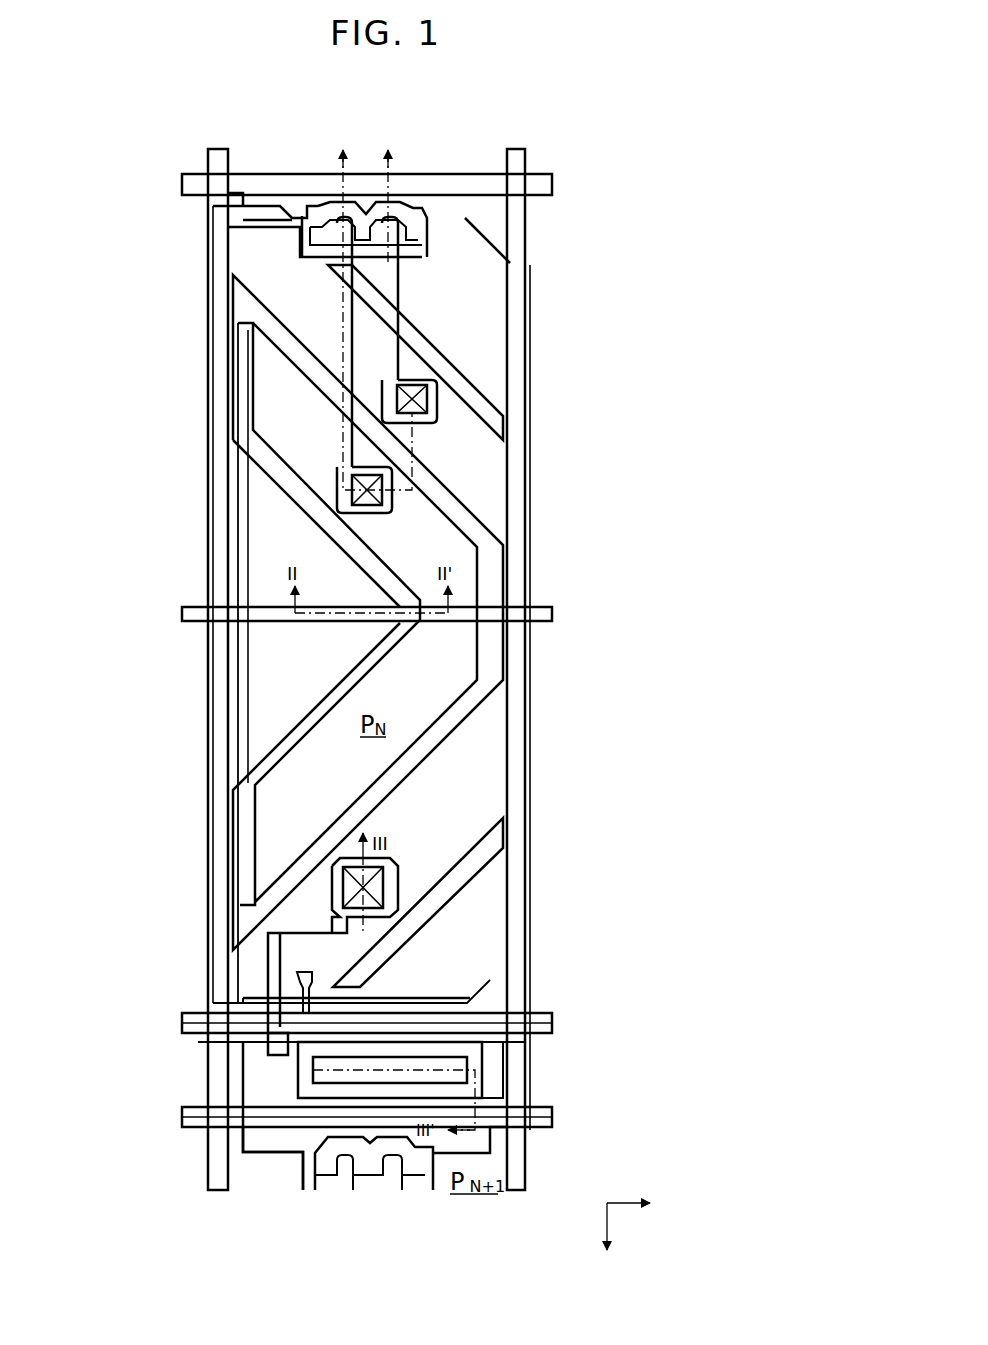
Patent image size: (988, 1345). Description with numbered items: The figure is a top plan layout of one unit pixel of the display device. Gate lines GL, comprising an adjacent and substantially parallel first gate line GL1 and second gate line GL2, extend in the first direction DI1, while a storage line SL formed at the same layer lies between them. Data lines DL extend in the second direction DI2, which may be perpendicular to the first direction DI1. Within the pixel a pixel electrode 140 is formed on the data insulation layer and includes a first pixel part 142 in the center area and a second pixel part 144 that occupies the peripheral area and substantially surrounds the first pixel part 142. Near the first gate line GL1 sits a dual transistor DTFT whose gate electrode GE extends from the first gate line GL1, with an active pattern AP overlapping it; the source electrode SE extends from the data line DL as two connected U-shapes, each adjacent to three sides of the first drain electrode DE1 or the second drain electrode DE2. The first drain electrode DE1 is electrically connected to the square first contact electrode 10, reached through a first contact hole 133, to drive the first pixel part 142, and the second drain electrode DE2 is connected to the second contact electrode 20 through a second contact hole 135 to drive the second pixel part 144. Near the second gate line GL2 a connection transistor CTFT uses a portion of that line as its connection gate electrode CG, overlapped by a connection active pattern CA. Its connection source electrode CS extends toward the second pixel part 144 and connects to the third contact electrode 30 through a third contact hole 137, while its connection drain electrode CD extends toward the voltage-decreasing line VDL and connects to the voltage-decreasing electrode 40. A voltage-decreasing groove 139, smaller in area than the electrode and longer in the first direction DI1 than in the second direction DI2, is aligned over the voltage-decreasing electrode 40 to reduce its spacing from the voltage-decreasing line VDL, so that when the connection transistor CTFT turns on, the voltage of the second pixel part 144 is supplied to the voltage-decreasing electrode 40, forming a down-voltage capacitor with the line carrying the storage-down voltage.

The data line DL is at (232, 216).
The gate line GL is at (640, 158).
The first gate line GL1 is at (545, 186).
The second gate line GL2 is at (548, 1021).
The storage line SL is at (190, 614).
The dual transistor DTFT is at (447, 332).
The source electrode SE is at (413, 203).
The active pattern AP is at (398, 216).
The gate electrode GE is at (368, 252).
The first drain electrode DE1 is at (348, 302).
The second drain electrode DE2 is at (398, 278).
The pixel electrode 140 is at (444, 634).
The first pixel part 142 is at (277, 367).
The second pixel part 144 is at (483, 363).
The second contact electrode 20 is at (432, 395).
The second contact hole 135 is at (437, 408).
The first contact electrode 10 is at (340, 497).
The first contact hole 133 is at (343, 480).
The third contact electrode 30 is at (390, 884).
The third contact hole 137 is at (386, 897).
The connection transistor CTFT is at (283, 1065).
The connection source electrode CS is at (277, 950).
The connection drain electrode CD is at (265, 980).
The connection gate electrode CG is at (300, 988).
The connection active pattern CA is at (240, 1023).
The voltage-decreasing line VDL is at (252, 1041).
The voltage-decreasing groove 139 is at (460, 1060).
The voltage-decreasing electrode 40 is at (478, 1087).
The first direction DI1 is at (651, 1203).
The second direction DI2 is at (607, 1245).